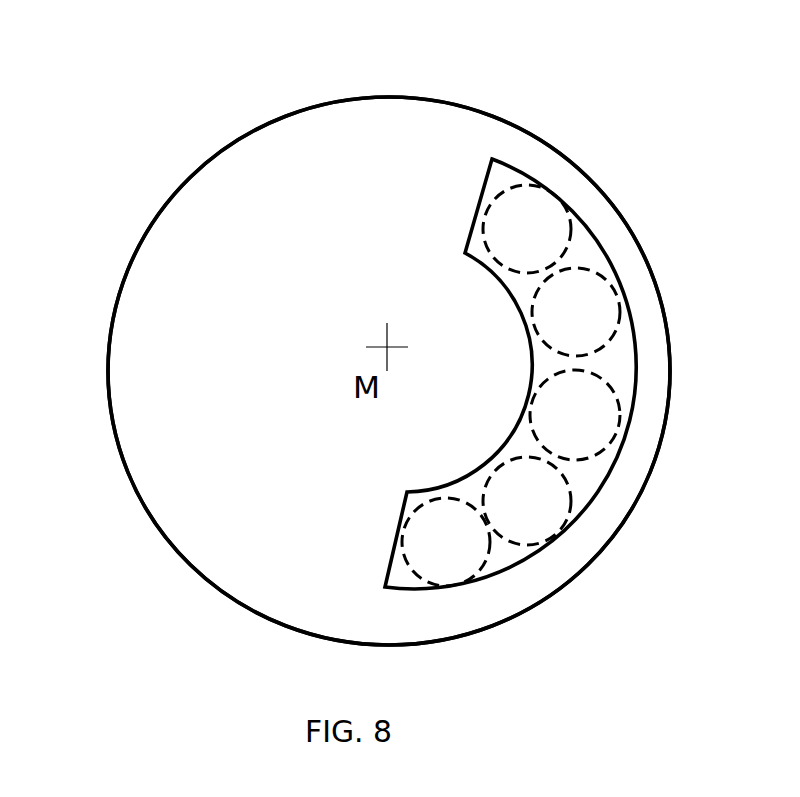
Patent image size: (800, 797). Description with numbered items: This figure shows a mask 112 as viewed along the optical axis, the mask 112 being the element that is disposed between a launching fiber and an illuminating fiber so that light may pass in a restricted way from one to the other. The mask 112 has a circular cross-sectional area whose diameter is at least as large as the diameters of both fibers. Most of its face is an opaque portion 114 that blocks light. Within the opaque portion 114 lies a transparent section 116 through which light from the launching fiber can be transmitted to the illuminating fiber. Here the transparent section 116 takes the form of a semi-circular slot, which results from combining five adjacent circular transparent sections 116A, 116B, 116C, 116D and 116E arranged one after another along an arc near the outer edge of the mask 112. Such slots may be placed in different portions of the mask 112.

The mask 112 is at (389, 360).
The opaque portion 114 is at (389, 332).
The transparent section 116 is at (554, 374).
The circular transparent section 116A is at (588, 200).
The circular transparent section 116B is at (642, 312).
The circular transparent section 116C is at (650, 415).
The circular transparent section 116D is at (606, 502).
The circular transparent section 116E is at (508, 572).